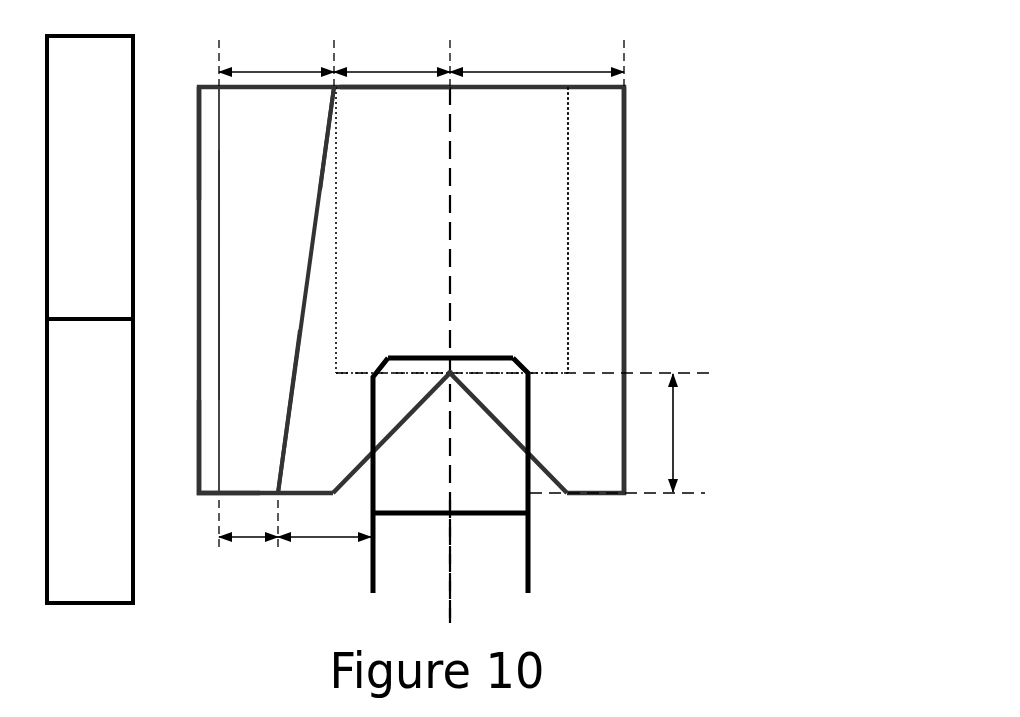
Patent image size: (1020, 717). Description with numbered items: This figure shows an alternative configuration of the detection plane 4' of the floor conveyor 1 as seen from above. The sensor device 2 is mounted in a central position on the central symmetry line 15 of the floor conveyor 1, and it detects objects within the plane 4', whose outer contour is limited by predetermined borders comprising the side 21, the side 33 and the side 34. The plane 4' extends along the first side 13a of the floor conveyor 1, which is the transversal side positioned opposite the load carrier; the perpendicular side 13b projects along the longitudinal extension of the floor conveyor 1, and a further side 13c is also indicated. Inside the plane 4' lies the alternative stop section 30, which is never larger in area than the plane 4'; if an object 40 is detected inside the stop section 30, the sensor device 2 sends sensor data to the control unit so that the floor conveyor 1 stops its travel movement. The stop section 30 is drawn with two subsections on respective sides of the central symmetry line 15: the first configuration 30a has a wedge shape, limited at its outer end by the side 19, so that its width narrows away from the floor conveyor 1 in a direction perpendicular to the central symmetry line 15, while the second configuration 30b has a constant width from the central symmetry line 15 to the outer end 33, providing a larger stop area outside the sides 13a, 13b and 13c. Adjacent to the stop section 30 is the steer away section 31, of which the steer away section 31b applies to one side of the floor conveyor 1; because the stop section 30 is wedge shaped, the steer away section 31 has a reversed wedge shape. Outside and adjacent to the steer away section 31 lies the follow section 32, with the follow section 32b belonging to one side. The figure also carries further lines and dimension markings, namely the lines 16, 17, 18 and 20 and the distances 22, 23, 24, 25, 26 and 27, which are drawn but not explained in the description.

The floor conveyor 1 is at (556, 516).
The sensor device 2 is at (450, 375).
The alternative plane 4' is at (479, 275).
The first side 13a is at (458, 358).
The perpendicular side 13b is at (370, 435).
The third side 13c is at (531, 415).
The central symmetry line 15 is at (450, 568).
The vertical boundary line 16 is at (566, 210).
The upper horizontal line 17 is at (600, 373).
The lower horizontal line 18 is at (705, 493).
The side 19 is at (287, 447).
The inner edge 20 is at (222, 225).
The side 21 is at (199, 480).
The distance 22 is at (324, 561).
The width 23 is at (392, 58).
The height 24 is at (697, 433).
The width 25 is at (537, 58).
The distance 26 is at (248, 538).
The width 27 is at (276, 58).
The alternative stop section 30 is at (451, 355).
The first configuration 30a is at (380, 230).
The second configuration 30b is at (452, 230).
The steer away section 31 is at (255, 281).
The steer away section 31b is at (292, 138).
The follow section 32 is at (205, 155).
The follow section 32b is at (203, 185).
The side 33 is at (624, 260).
The side 34 is at (412, 88).
The object 40 is at (133, 258).